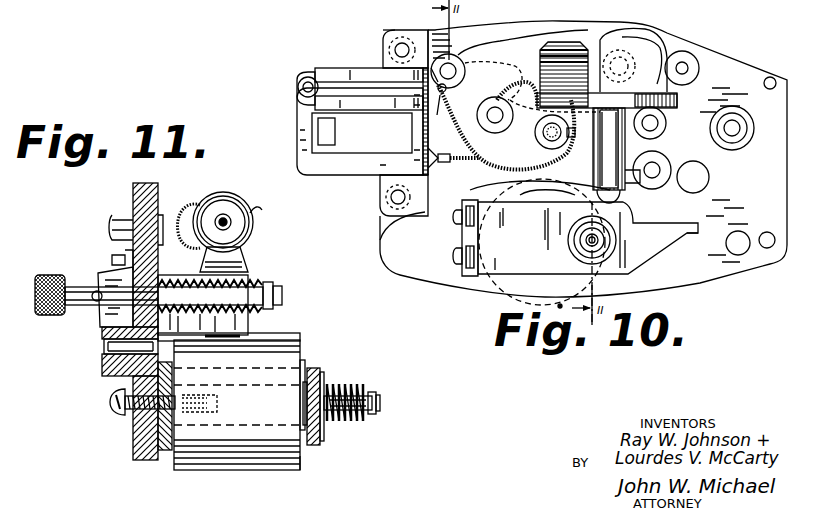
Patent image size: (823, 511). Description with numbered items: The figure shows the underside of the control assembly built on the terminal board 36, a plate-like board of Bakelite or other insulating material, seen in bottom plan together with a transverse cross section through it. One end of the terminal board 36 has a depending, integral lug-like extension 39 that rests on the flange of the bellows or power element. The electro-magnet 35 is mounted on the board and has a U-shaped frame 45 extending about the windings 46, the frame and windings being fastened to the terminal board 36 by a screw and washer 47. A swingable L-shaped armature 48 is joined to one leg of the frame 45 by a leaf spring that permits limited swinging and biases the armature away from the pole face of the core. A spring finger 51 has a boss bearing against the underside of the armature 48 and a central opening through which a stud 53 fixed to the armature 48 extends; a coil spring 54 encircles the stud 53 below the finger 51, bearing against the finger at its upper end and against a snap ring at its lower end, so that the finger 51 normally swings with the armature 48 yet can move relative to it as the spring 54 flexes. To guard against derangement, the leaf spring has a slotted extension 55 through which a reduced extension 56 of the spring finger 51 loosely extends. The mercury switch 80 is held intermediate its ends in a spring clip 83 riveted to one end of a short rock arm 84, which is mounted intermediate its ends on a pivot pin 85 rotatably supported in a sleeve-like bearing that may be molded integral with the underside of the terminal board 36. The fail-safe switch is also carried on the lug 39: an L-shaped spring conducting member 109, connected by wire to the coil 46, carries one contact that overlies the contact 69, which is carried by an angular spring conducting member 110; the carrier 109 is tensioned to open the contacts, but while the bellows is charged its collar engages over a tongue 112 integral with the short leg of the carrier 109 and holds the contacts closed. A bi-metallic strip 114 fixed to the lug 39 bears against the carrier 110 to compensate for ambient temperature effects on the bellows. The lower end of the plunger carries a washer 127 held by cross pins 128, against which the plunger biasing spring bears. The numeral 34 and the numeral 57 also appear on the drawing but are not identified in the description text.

In FIG. 10, the mounting lug 34 is at (362, 15).
In FIG. 10, the electro-magnet 35 is at (508, 290).
In FIG. 11, the electro-magnet 35 is at (302, 462).
In FIG. 10, the terminal board 36 is at (724, 190).
In FIG. 11, the terminal board 36 is at (158, 193).
In FIG. 10, the lug-like extension 39 is at (410, 210).
In FIG. 11, the U-shaped frame 45 is at (160, 462).
In FIG. 10, the windings 46 is at (540, 292).
In FIG. 11, the windings 46 is at (239, 405).
In FIG. 11, the screw and washer 47 is at (110, 400).
In FIG. 11, the armature 48 is at (316, 366).
In FIG. 10, the spring finger 51 is at (588, 238).
In FIG. 11, the spring finger 51 is at (325, 440).
In FIG. 11, the stud 53 is at (354, 394).
In FIG. 10, the coil spring 54 is at (616, 242).
In FIG. 11, the coil spring 54 is at (332, 384).
In FIG. 10, the slotted extension 55 is at (465, 196).
In FIG. 10, the reduced extension 56 is at (462, 239).
In FIG. 10, the step portion 57 is at (690, 240).
In FIG. 10, the contact 69 is at (312, 78).
In FIG. 10, the switch 80 is at (530, 44).
In FIG. 10, the spring clip 83 is at (572, 62).
In FIG. 11, the spring clip 83 is at (247, 256).
In FIG. 10, the rock arm 84 is at (507, 116).
In FIG. 10, the pivot pin 85 is at (647, 82).
In FIG. 11, the pivot pin 85 is at (207, 338).
In FIG. 10, the conducting member 109 is at (362, 121).
In FIG. 10, the angular conducting member 110 is at (360, 89).
In FIG. 10, the tongue 112 is at (336, 131).
In FIG. 10, the bi-metallic strip 114 is at (377, 68).
In FIG. 10, the washer 127 is at (550, 149).
In FIG. 10, the cross pins 128 is at (576, 136).